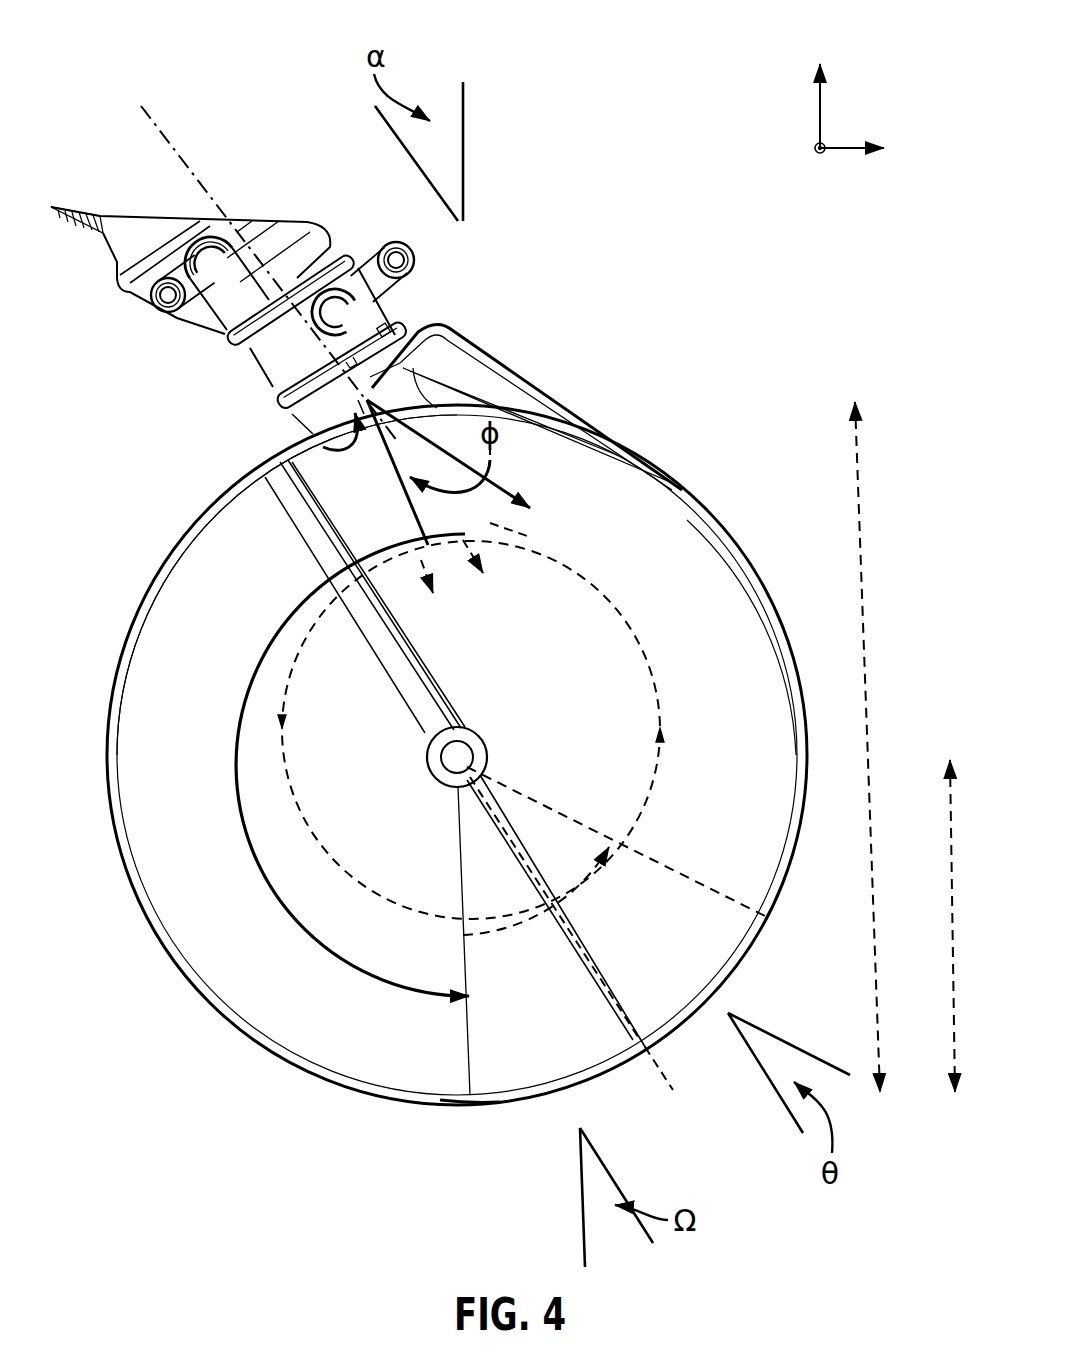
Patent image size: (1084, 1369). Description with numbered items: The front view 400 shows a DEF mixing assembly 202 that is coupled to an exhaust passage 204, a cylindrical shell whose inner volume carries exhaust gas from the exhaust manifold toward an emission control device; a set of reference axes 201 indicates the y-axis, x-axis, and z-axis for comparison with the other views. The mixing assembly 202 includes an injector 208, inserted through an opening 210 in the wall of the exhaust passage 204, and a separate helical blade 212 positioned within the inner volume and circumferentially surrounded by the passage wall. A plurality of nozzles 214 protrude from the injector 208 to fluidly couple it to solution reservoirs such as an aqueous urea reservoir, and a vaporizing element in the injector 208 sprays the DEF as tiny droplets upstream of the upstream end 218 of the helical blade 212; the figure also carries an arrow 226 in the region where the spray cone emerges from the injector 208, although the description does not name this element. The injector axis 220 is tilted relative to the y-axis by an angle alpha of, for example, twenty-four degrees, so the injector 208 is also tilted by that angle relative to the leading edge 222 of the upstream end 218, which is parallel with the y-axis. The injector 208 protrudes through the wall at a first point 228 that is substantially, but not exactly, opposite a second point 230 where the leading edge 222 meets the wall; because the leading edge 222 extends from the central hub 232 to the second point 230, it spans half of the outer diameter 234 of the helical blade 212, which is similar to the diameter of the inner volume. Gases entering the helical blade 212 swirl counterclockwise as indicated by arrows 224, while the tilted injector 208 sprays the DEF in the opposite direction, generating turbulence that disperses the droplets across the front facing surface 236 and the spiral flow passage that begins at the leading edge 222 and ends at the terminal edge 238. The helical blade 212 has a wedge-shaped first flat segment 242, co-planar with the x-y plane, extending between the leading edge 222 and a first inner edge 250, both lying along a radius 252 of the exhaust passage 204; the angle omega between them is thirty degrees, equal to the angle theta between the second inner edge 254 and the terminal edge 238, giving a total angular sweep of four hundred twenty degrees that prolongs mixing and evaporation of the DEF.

The front view 400 is at (108, 85).
The reference axes 201 is at (870, 98).
The mixing assembly 202 is at (245, 115).
The exhaust passage 204 is at (215, 497).
The injector 208 is at (274, 237).
The opening 210 is at (434, 338).
The helical blade 212 is at (200, 580).
The nozzles 214 is at (150, 304).
The upstream end 218 is at (452, 1050).
The injector axis 220 is at (168, 146).
The leading edge 222 is at (460, 830).
The arrows 224 is at (560, 567).
The force direction arrow 226 is at (510, 497).
The first point 228 is at (323, 447).
The second point 230 is at (475, 1106).
The central hub 232 is at (427, 760).
The outer diameter 234 is at (873, 713).
The front facing surface 236 is at (687, 520).
The terminal edge 238 is at (667, 862).
The first flat segment 242 is at (510, 1013).
The first inner edge 250 is at (580, 952).
The radius 252 is at (950, 862).
The second inner edge 254 is at (668, 1072).